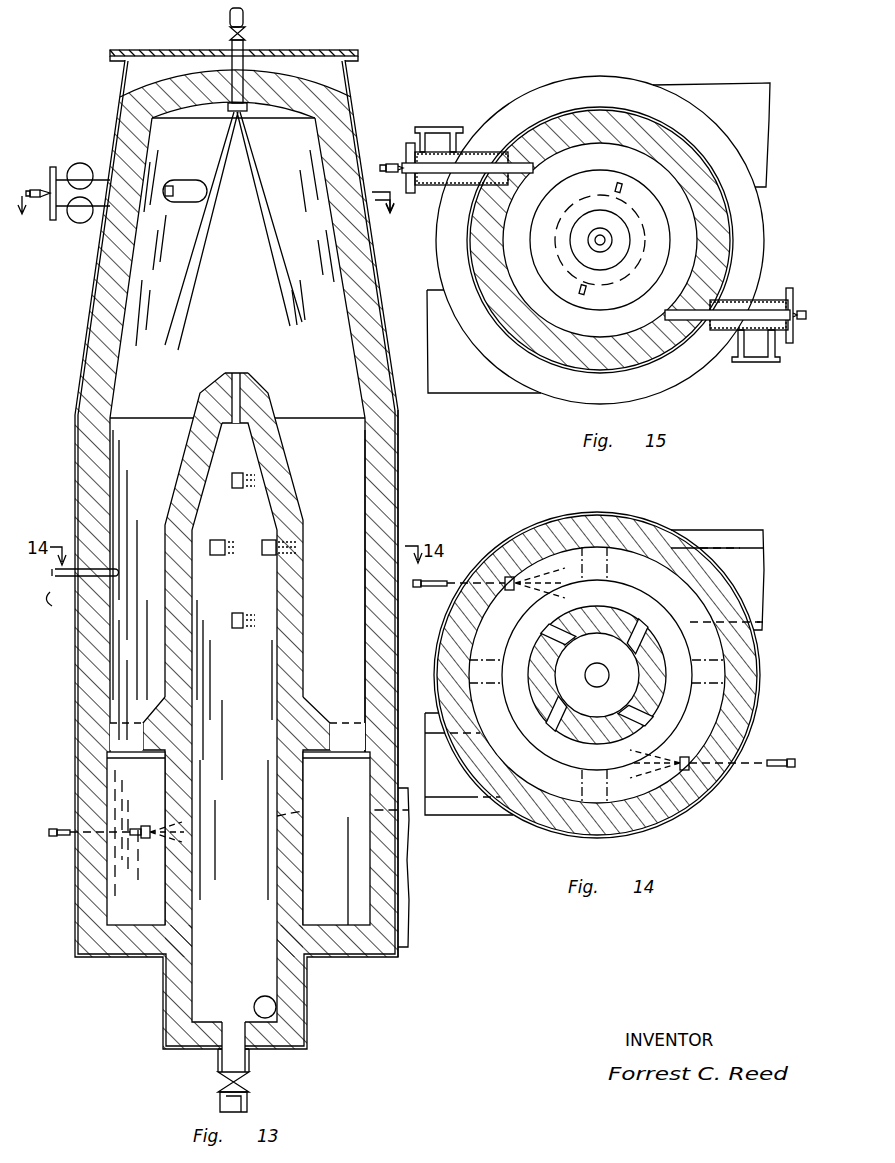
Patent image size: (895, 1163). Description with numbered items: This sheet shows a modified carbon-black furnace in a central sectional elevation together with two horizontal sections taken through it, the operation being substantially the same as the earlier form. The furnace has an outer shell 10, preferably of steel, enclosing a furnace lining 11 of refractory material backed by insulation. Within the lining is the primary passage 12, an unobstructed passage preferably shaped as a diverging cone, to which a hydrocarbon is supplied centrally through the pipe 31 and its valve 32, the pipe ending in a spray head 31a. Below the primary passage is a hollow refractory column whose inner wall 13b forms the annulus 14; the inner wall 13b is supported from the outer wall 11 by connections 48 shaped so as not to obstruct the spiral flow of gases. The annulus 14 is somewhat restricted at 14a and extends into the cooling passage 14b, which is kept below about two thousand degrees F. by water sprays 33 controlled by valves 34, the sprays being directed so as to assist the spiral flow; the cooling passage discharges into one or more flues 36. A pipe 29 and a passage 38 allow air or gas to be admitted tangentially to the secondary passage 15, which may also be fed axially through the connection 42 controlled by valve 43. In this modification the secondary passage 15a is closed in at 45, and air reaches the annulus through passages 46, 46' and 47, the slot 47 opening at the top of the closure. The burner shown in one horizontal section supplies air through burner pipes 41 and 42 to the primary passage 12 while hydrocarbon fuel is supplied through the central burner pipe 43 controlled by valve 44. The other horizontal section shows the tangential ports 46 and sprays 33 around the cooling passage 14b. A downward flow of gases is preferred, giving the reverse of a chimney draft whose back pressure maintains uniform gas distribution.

In FIG. 13, the outer shell 10 is at (82, 366).
In FIG. 13, the furnace lining 11 is at (105, 330).
In FIG. 13, the primary passage 12 is at (312, 268).
In FIG. 13, the inner wall of annulus 13b is at (178, 648).
In FIG. 13, the annulus 14 is at (345, 530).
In FIG. 14, the annulus 14 is at (597, 675).
In FIG. 13, the restriction 14a is at (122, 738).
In FIG. 14, the restriction 14a is at (640, 565).
In FIG. 13, the cooling passage 14b is at (135, 772).
In FIG. 13, the secondary passage 15 is at (209, 212).
In FIG. 15, the secondary passage 15 is at (390, 216).
In FIG. 13, the secondary passage 15a is at (262, 668).
In FIG. 14, the secondary passage 15a is at (612, 647).
In FIG. 13, the pipe 29 is at (273, 1010).
In FIG. 13, the pipe 31 is at (245, 52).
In FIG. 13, the spray head 31a is at (250, 111).
In FIG. 13, the valve 32 is at (232, 37).
In FIG. 13, the water sprays 33 is at (144, 840).
In FIG. 14, the water sprays 33 is at (510, 591).
In FIG. 13, the valves 34 is at (62, 840).
In FIG. 14, the valves 34 is at (437, 589).
In FIG. 13, the discharge flue 36 is at (409, 905).
In FIG. 14, the discharge flue 36 is at (742, 570).
In FIG. 13, the air passage 38 is at (74, 599).
In FIG. 15, the burner pipe 41 is at (445, 128).
In FIG. 13, the burner pipe 42 is at (228, 1060).
In FIG. 15, the burner pipe 42 is at (446, 184).
In FIG. 14, the burner pipe 42 is at (605, 674).
In FIG. 13, the central burner pipe 43 is at (228, 1082).
In FIG. 15, the central burner pipe 43 is at (500, 163).
In FIG. 13, the valve 44 is at (33, 188).
In FIG. 15, the valve 44 is at (400, 163).
In FIG. 13, the closure 45 is at (290, 466).
In FIG. 13, the air passage 46 is at (254, 564).
In FIG. 14, the air passage 46 is at (597, 675).
In FIG. 13, the air passage 46' is at (247, 568).
In FIG. 15, the air passage 46' is at (629, 255).
In FIG. 13, the air passage 47 is at (241, 373).
In FIG. 15, the air passage 47 is at (603, 246).
In FIG. 13, the connections 48 is at (115, 722).
In FIG. 14, the connections 48 is at (613, 547).